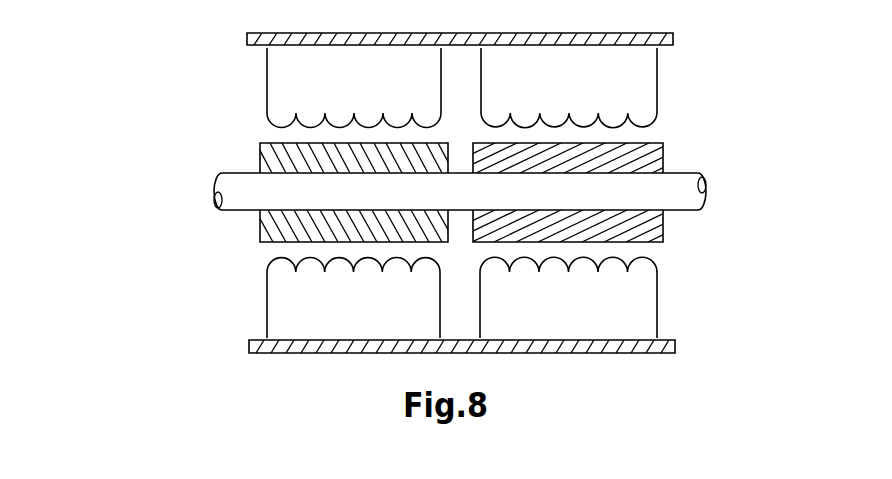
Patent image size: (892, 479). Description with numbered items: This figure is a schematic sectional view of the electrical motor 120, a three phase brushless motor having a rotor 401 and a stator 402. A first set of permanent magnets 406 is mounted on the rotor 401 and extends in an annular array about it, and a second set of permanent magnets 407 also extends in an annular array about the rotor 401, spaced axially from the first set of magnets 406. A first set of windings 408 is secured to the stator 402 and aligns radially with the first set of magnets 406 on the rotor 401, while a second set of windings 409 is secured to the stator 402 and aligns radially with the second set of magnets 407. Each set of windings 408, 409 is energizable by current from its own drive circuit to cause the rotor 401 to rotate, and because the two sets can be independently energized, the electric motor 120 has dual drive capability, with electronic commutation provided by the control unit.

The electrical motor 120 is at (176, 216).
The rotor 401 is at (690, 198).
The stator 402 is at (663, 48).
The first set of permanent magnets 406 is at (277, 142).
The second set of permanent magnets 407 is at (653, 157).
The first set of windings 408 is at (335, 120).
The second set of windings 409 is at (610, 121).